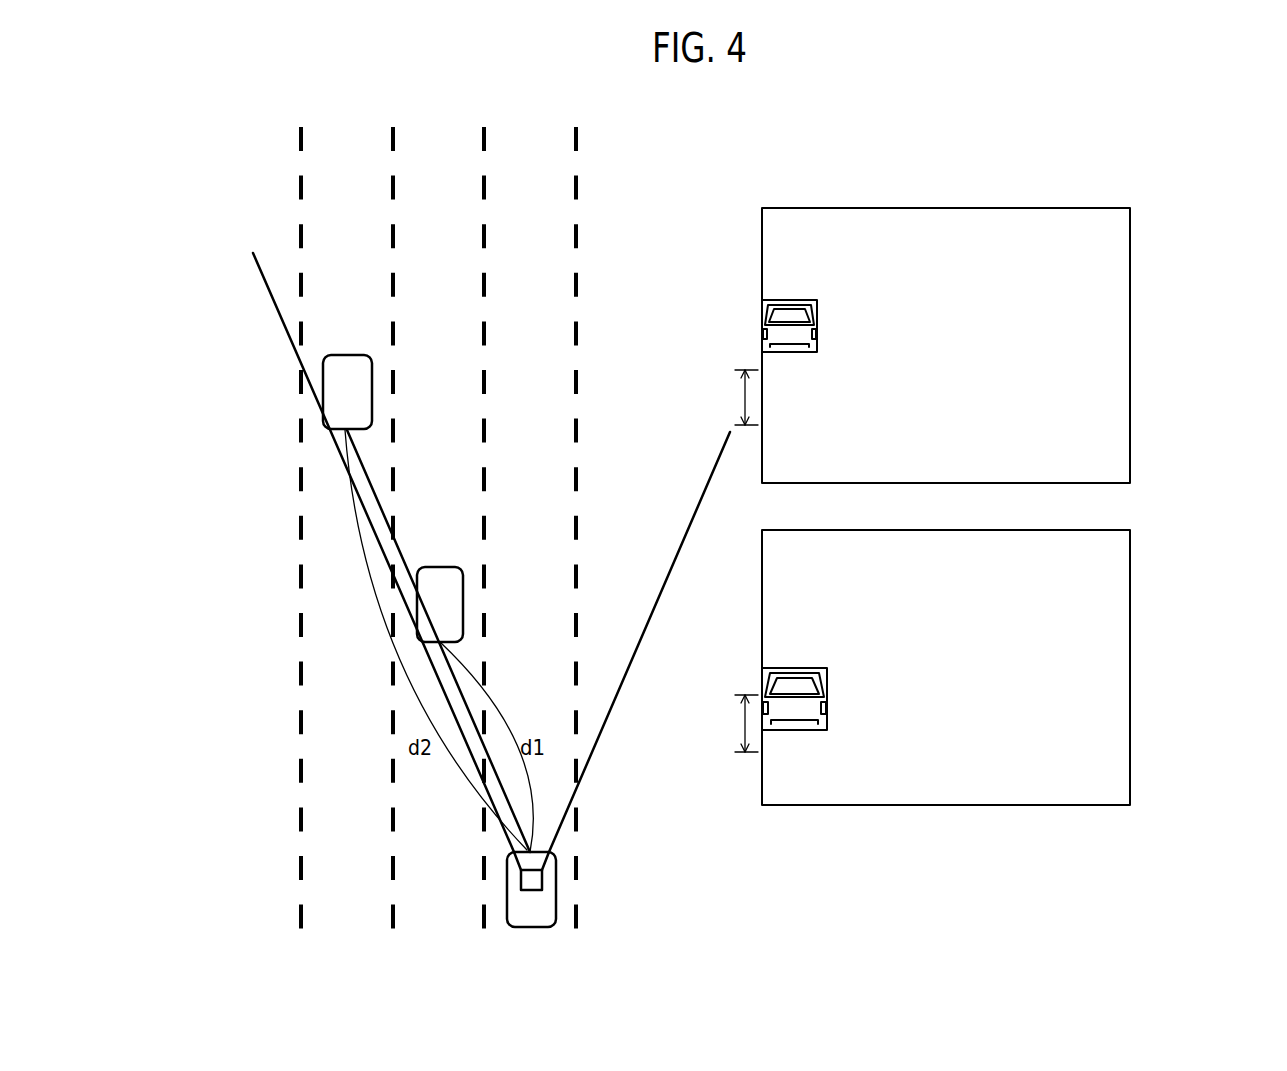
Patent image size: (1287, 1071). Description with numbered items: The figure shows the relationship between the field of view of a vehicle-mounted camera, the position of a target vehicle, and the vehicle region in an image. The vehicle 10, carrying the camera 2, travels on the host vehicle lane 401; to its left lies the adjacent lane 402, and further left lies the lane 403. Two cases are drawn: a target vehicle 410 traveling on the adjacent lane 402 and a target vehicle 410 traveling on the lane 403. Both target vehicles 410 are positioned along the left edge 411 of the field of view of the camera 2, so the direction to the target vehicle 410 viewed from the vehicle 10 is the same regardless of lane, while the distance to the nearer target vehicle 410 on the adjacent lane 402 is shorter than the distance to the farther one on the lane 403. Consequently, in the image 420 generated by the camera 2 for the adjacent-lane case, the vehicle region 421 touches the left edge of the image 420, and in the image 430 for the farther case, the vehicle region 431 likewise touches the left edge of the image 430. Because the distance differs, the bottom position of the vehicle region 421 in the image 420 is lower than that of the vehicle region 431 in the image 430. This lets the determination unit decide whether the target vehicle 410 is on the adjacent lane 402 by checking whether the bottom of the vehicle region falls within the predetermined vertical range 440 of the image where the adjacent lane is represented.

The camera 2 is at (542, 878).
The vehicle 10 is at (556, 908).
The host vehicle lane 401 is at (576, 117).
The adjacent lane 402 is at (484, 117).
The lane 403 is at (393, 117).
The target vehicle 410 is at (372, 405).
The left edge of the field of view 411 is at (262, 278).
The image 420 is at (1130, 778).
The vehicle region 421 is at (827, 683).
The image 430 is at (1130, 455).
The vehicle region 431 is at (817, 308).
The predetermined vertical range 440 is at (745, 390).